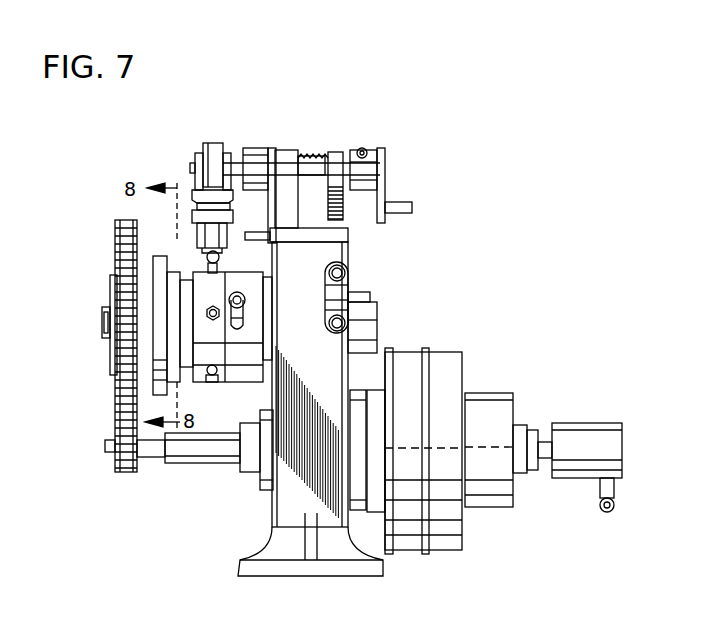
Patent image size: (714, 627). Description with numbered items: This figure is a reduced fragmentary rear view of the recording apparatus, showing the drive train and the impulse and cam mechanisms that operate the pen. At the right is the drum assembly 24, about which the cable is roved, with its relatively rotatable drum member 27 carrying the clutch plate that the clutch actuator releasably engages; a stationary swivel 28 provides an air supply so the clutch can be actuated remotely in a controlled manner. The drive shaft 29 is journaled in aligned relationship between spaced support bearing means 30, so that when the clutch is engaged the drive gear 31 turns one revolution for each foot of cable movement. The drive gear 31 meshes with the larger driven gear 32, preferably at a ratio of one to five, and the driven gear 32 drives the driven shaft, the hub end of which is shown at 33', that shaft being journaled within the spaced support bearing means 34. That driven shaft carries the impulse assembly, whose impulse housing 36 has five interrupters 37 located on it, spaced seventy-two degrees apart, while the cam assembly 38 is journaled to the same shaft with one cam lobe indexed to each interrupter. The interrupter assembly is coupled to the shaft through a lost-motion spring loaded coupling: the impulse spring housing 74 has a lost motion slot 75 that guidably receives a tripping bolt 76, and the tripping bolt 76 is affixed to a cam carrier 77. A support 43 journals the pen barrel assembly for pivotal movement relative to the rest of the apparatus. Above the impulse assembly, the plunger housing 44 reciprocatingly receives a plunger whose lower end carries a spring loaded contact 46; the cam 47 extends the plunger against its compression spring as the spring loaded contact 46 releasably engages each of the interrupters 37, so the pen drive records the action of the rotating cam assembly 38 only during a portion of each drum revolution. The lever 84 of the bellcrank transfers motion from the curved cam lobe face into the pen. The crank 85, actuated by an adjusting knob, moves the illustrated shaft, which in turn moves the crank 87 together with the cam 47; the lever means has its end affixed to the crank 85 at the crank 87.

The drum assembly 24 is at (516, 384).
The drum member 27 is at (470, 347).
The stationary swivel 28 is at (570, 414).
The drive shaft 29 is at (195, 457).
The support bearing means 30 is at (348, 503).
The drive gear 31 is at (120, 473).
The driven gear 32 is at (115, 240).
The hub 33' is at (74, 311).
The support bearing means 34 is at (352, 296).
The impulse housing 36 is at (233, 350).
The interrupters 37 is at (208, 316).
The cam assembly 38 is at (159, 252).
The support 43 is at (278, 528).
The plunger housing 44 is at (202, 138).
The spring loaded contact 46 is at (223, 254).
The cam 47 is at (243, 146).
The impulse spring housing 74 is at (245, 318).
The lost motion slot 75 is at (245, 305).
The tripping bolt 76 is at (245, 294).
The cam carrier 77 is at (196, 380).
The lever 84 is at (194, 155).
The crank 85 is at (385, 185).
The crank 87 is at (300, 152).